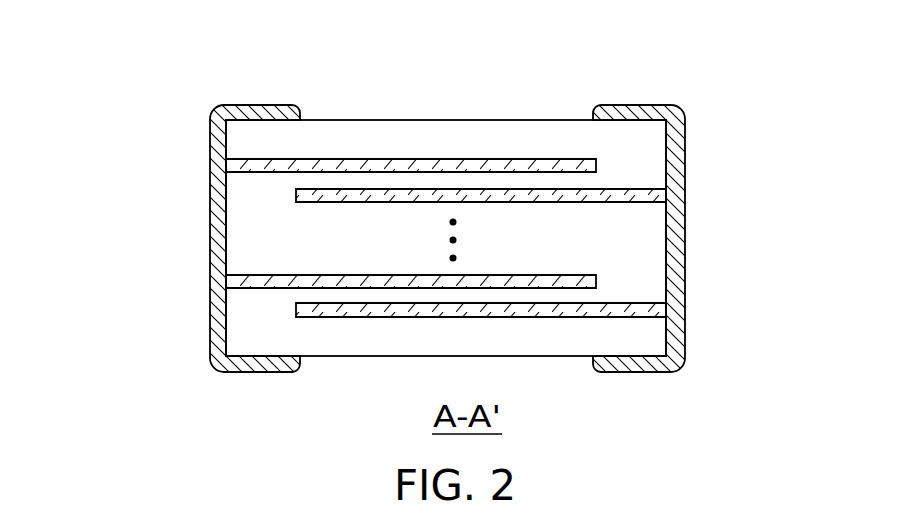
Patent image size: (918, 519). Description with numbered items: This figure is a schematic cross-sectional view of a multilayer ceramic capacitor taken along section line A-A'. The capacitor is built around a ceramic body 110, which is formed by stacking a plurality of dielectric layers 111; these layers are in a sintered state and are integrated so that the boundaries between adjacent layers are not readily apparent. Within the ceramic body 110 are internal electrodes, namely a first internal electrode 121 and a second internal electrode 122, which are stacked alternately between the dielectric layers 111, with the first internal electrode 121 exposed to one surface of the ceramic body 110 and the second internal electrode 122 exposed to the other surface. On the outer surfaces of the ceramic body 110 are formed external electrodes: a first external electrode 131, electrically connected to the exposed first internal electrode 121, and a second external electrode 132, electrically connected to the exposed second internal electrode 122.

The ceramic body 110 is at (398, 120).
The dielectric layer 111 is at (592, 293).
The first internal electrode 121 is at (230, 158).
The second internal electrode 122 is at (638, 310).
The first external electrode 131 is at (258, 112).
The second external electrode 132 is at (640, 112).